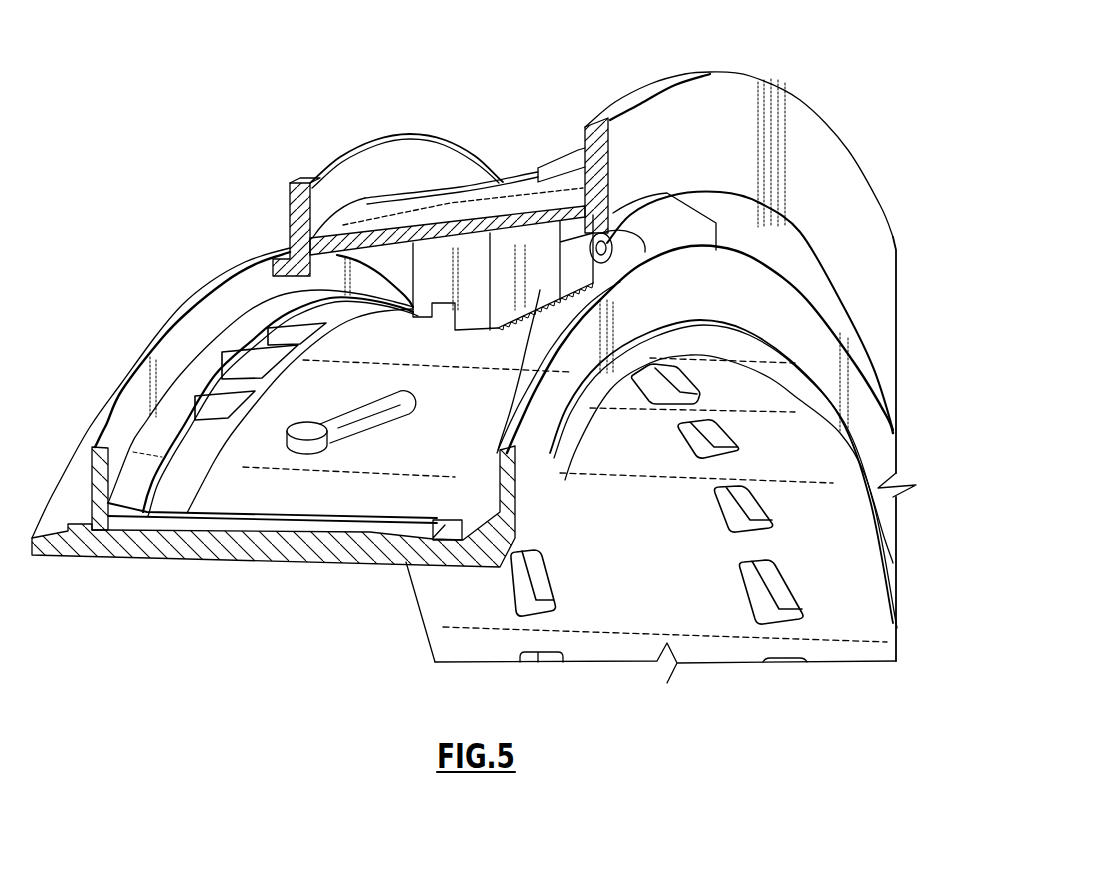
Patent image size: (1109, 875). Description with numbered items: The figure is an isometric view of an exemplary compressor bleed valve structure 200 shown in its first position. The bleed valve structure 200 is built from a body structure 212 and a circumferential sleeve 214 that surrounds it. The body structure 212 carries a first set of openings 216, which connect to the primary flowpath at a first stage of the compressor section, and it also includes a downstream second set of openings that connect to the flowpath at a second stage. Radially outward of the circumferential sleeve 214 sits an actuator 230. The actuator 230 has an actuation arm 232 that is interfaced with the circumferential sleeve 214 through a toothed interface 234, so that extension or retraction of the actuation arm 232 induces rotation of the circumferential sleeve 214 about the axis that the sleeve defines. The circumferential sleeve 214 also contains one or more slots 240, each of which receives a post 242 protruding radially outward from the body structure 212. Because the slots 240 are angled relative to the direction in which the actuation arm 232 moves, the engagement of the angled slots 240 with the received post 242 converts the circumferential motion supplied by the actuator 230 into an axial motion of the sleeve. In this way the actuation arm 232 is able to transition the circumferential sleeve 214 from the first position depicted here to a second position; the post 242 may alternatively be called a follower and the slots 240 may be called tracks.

The compressor bleed valve structure 200 is at (229, 183).
The body structure 212 is at (107, 545).
The circumferential sleeve 214 is at (387, 503).
The first set of openings 216 is at (178, 500).
The actuator 230 is at (635, 240).
The actuation arm 232 is at (573, 273).
The toothed interface 234 is at (548, 320).
The slots 240 is at (357, 428).
The post 242 is at (317, 428).